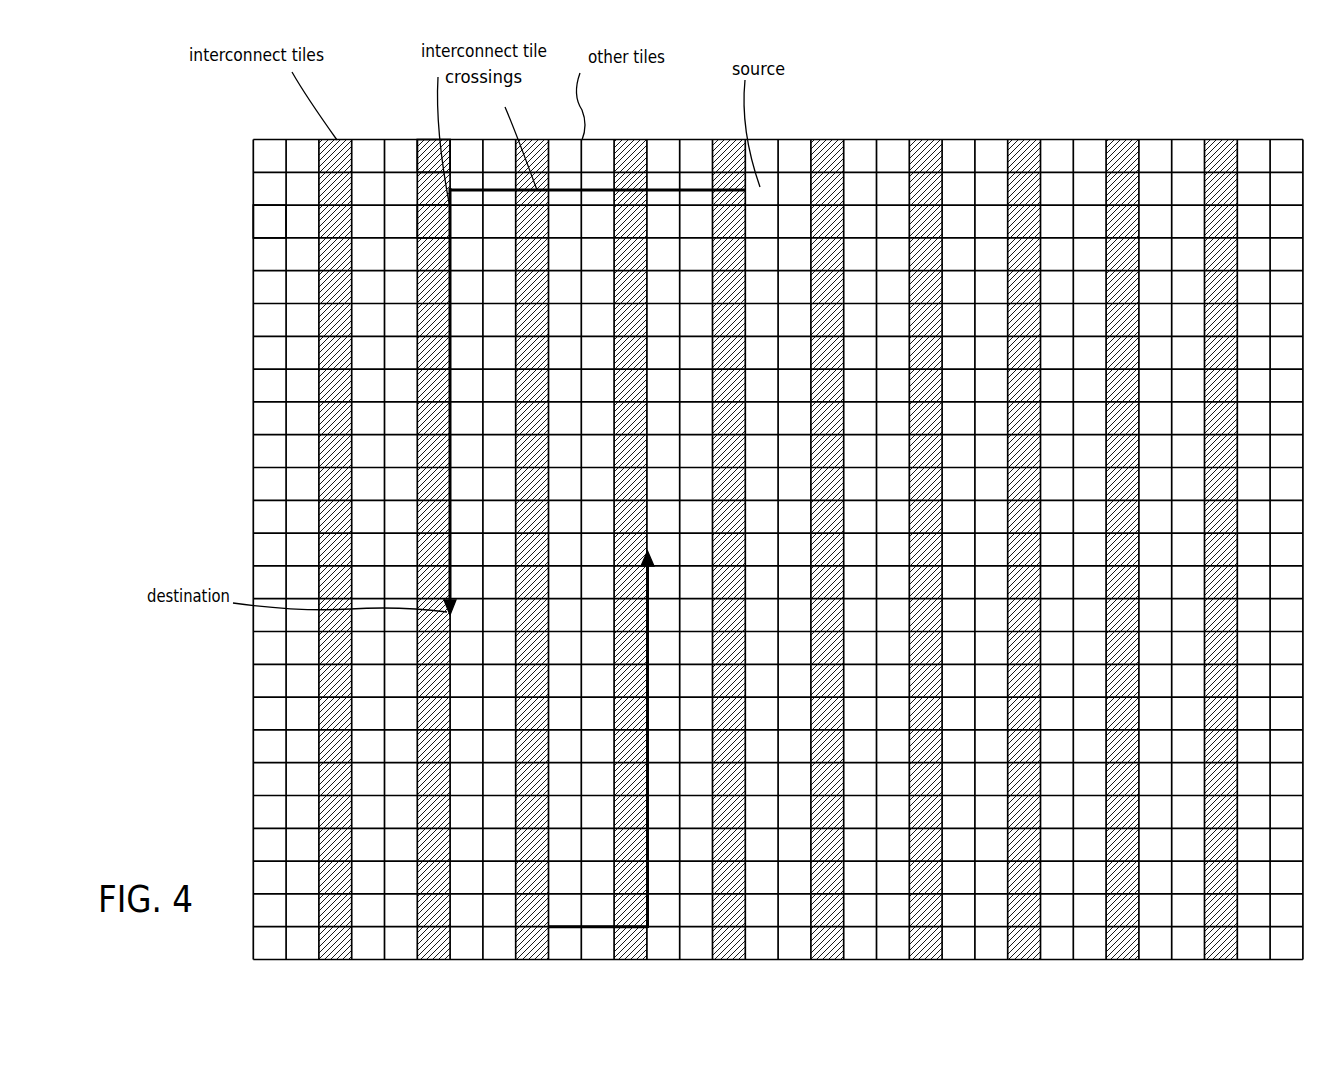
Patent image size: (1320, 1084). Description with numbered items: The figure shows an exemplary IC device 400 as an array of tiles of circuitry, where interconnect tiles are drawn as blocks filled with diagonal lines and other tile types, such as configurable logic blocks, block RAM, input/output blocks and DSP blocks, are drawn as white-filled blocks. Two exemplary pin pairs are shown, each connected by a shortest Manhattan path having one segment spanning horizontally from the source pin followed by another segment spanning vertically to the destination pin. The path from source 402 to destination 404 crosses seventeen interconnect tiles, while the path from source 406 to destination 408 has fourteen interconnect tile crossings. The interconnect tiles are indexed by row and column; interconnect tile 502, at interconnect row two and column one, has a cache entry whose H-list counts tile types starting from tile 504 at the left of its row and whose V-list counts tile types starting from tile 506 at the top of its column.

The IC device 400 is at (233, 123).
The source 402 is at (614, 189).
The destination 404 is at (465, 407).
The source 406 is at (598, 940).
The destination 408 is at (662, 735).
The interconnect tile 502 is at (432, 218).
The tile 504 is at (265, 213).
The tile 506 is at (433, 157).